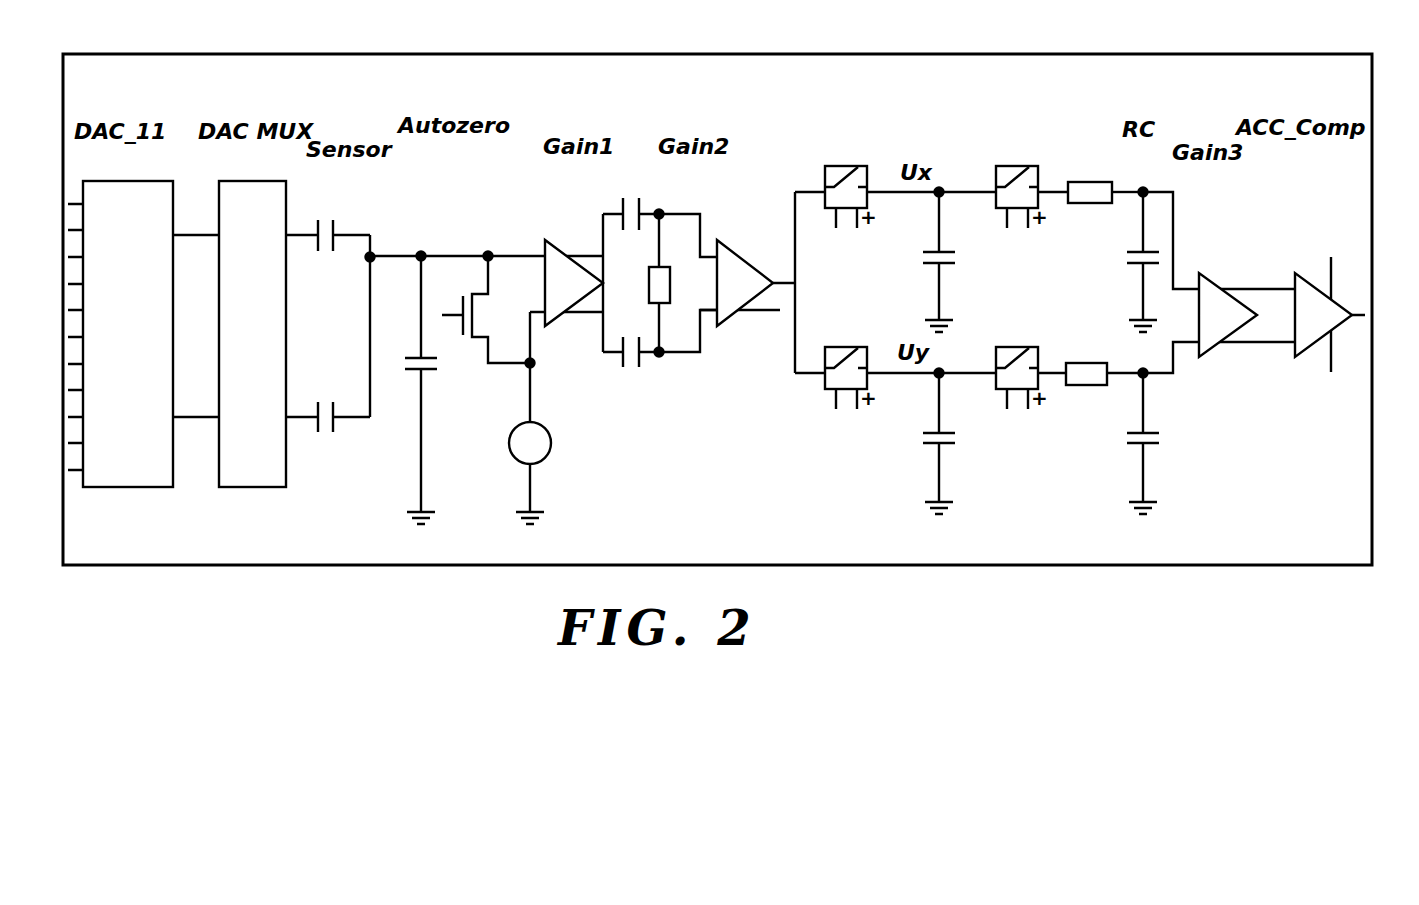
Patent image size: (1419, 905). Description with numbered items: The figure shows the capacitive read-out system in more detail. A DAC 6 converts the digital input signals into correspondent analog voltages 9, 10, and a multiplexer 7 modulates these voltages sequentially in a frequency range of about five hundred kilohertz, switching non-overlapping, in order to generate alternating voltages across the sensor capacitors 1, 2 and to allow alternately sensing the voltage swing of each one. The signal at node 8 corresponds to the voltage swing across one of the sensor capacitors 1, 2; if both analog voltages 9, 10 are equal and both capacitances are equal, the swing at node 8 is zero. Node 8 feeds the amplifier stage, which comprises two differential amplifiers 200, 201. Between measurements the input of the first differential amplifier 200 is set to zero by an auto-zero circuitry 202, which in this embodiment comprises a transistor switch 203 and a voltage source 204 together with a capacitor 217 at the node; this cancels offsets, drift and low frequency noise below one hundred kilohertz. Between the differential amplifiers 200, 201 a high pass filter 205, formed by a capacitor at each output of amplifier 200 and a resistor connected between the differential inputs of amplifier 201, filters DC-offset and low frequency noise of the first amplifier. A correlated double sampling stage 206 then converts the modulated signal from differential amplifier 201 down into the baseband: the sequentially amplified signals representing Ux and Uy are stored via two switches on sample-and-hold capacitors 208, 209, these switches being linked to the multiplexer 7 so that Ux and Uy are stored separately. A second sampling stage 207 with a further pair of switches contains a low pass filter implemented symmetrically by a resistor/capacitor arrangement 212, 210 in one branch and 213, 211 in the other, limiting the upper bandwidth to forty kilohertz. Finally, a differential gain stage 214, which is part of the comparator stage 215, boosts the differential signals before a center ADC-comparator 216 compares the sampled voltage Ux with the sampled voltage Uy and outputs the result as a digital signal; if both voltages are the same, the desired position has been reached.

The sensor capacitor 1 is at (328, 221).
The sensor capacitor 2 is at (330, 432).
The DAC 6 is at (126, 489).
The multiplexer 7 is at (250, 489).
The node 8 is at (375, 262).
The analog voltage 9 is at (196, 222).
The analog voltage 10 is at (196, 404).
The differential amplifier 200 is at (545, 247).
The differential amplifier 201 is at (725, 247).
The auto-zero circuitry 202 is at (515, 230).
The transistor switch 203 is at (481, 309).
The voltage source 204 is at (512, 426).
The high pass filter 205 is at (722, 412).
The correlated double sampling stage 206 is at (912, 122).
The second sampling stage 207 is at (1105, 122).
The sample-and-hold capacitor 208 is at (956, 258).
The sample-and-hold capacitor 209 is at (956, 439).
The capacitor 210 is at (1126, 258).
The capacitor 211 is at (1160, 439).
The resistor 212 is at (1105, 179).
The resistor 213 is at (1104, 360).
The differential gain stage 214 is at (1212, 272).
The comparator stage 215 is at (1330, 413).
The center ADC-comparator 216 is at (1290, 272).
The autozero capacitor 217 is at (436, 363).